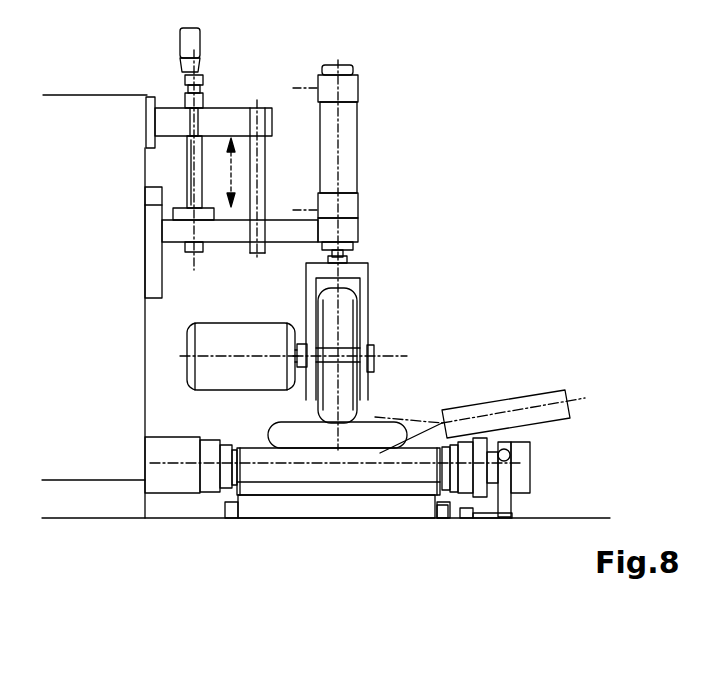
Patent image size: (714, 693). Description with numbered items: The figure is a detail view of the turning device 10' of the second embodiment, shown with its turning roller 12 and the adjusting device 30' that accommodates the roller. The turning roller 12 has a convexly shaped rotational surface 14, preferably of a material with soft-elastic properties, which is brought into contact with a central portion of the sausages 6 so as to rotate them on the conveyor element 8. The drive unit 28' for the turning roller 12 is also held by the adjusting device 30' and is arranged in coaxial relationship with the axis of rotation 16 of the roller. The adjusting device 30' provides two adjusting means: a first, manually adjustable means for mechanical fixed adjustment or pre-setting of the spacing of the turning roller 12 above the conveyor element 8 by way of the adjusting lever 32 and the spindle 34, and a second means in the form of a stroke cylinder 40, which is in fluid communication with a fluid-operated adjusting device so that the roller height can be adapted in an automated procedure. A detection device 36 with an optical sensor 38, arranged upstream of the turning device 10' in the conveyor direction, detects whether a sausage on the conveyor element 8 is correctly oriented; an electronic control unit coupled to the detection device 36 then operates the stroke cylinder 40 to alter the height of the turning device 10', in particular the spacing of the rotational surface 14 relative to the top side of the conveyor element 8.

The sausages 6 is at (357, 433).
The conveyor element 8 is at (272, 472).
The turning device 10' is at (339, 306).
The turning roller 12 is at (358, 400).
The rotational surface 14 is at (345, 313).
The axis of rotation 16 is at (421, 352).
The drive unit 28' is at (163, 356).
The adjusting device 30' is at (263, 138).
The adjusting lever 32 is at (185, 43).
The spindle 34 is at (193, 170).
The detection device 36 is at (563, 452).
The optical sensor 38 is at (537, 397).
The stroke cylinder 40 is at (345, 123).